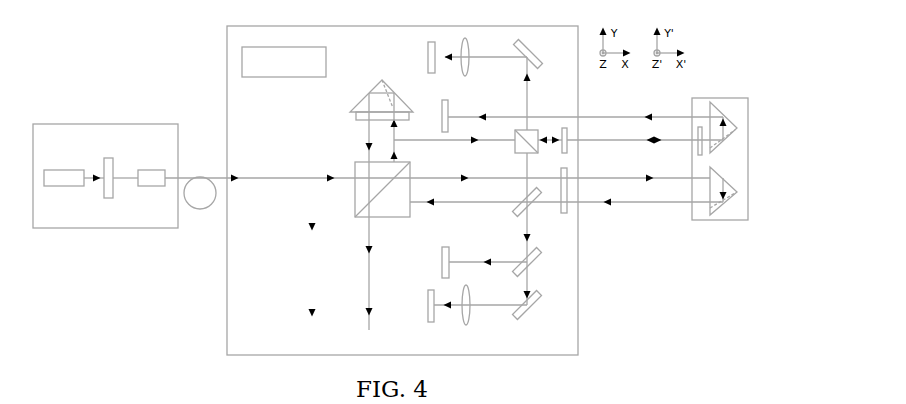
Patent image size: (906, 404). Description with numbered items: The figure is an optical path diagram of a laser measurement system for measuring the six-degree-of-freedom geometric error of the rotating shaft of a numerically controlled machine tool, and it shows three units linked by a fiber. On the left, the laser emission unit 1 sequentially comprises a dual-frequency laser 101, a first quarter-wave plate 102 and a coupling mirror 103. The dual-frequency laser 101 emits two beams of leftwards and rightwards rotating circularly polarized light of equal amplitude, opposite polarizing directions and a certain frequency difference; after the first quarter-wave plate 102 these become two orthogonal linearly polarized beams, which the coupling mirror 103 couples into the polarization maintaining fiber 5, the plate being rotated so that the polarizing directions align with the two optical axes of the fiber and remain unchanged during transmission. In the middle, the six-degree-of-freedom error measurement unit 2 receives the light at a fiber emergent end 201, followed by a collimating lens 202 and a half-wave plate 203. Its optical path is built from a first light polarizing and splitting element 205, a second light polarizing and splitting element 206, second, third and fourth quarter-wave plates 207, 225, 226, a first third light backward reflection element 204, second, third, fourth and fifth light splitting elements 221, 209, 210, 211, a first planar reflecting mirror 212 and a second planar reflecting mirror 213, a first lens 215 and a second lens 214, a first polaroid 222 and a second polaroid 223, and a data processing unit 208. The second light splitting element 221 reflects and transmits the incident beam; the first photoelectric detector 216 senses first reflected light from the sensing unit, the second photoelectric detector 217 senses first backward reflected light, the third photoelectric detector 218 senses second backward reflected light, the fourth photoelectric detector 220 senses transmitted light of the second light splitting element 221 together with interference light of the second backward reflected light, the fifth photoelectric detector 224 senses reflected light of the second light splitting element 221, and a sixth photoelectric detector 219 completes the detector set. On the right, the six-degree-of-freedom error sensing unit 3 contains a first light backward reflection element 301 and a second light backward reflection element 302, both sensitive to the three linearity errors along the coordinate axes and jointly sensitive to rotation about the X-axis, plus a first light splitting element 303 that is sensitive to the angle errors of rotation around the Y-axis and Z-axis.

The laser emission unit 1 is at (78, 130).
The dual-frequency laser 101 is at (63, 178).
The first λ/4 wave plate 102 is at (110, 178).
The coupling mirror 103 is at (152, 178).
The polarization maintaining fiber 5 is at (201, 202).
The six-degree-of-freedom error measurement unit 2 is at (235, 103).
The fiber emergent end 201 is at (241, 185).
The collimating lens 202 is at (278, 185).
The λ/2 wave plate 203 is at (343, 167).
The first third light backward reflection element 204 is at (381, 83).
The first light polarizing and splitting element 205 is at (381, 210).
The second light polarizing and splitting element 206 is at (520, 145).
The second λ/4 wave plate 207 is at (564, 127).
The data processing unit 208 is at (260, 72).
The third light splitting element 209 is at (402, 132).
The fourth light splitting element 210 is at (512, 218).
The fifth light splitting element 211 is at (543, 247).
The first planar reflecting mirror 212 is at (540, 55).
The second planar reflecting mirror 213 is at (542, 293).
The second lens 214 is at (468, 290).
The first lens 215 is at (468, 65).
The first photoelectric detector 216 is at (428, 60).
The second photoelectric detector 217 is at (450, 98).
The third photoelectric detector 218 is at (445, 253).
The sixth photoelectric detector 219 is at (427, 303).
The fourth photoelectric detector 220 is at (360, 332).
The second light splitting element 221 is at (307, 167).
The first polaroid 222 is at (305, 292).
The second polaroid 223 is at (360, 292).
The fifth photoelectric detector 224 is at (305, 332).
The third λ/4 wave plate 225 is at (563, 210).
The fourth λ/4 wave plate 226 is at (353, 112).
The six-degree-of-freedom error sensing unit 3 is at (743, 112).
The first light backward reflection element 301 is at (713, 110).
The second light backward reflection element 302 is at (716, 213).
The first light splitting element 303 is at (702, 145).